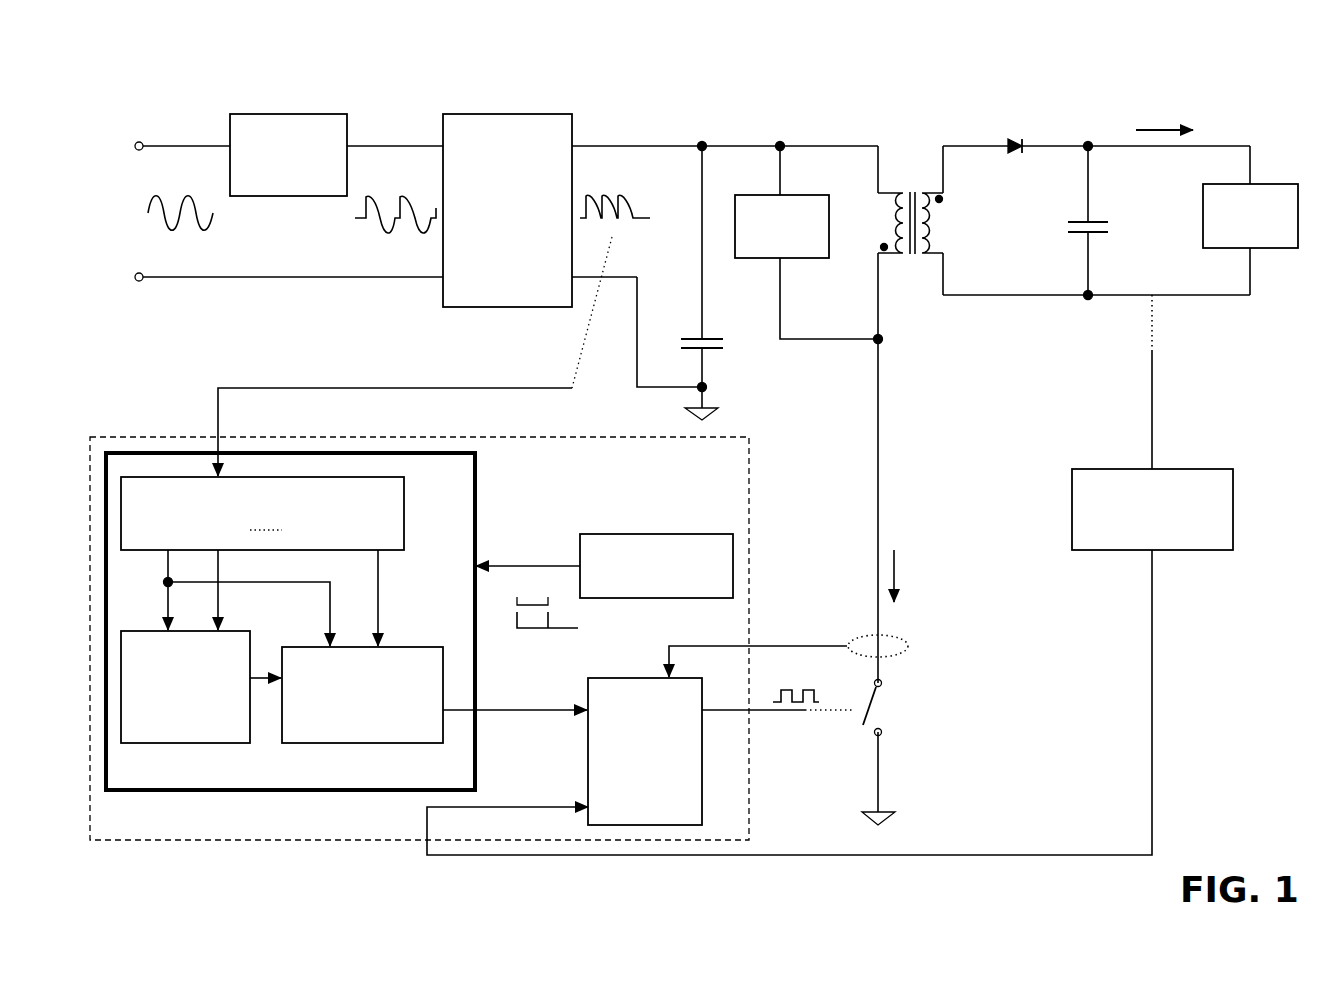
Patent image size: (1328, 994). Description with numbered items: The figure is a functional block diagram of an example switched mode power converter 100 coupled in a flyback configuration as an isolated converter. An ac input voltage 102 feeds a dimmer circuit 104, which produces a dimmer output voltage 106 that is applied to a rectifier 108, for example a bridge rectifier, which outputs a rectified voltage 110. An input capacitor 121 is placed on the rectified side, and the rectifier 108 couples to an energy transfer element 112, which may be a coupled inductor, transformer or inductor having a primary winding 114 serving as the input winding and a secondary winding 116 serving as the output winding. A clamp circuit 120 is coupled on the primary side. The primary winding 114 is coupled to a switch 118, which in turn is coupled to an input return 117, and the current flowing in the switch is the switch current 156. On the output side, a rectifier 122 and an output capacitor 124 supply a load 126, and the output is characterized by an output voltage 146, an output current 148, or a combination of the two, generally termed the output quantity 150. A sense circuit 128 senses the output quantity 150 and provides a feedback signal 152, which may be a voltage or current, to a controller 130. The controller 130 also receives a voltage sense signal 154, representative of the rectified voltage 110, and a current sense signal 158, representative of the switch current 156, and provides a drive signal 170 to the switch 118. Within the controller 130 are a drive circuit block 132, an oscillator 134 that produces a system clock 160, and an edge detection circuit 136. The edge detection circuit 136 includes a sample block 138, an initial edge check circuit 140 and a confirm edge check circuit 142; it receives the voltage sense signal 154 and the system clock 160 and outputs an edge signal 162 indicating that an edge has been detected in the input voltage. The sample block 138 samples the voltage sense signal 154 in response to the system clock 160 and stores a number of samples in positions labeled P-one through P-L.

The power converter 100 is at (1284, 68).
The ac input voltage 102 is at (116, 185).
The dimmer circuit 104 is at (278, 110).
The dimmer output voltage 106 is at (404, 157).
The rectifier 108 is at (502, 110).
The rectified voltage 110 is at (626, 157).
The energy transfer element 112 is at (912, 288).
The primary winding 114 is at (876, 226).
The secondary winding 116 is at (942, 228).
The input return 117 is at (718, 408).
The switch 118 is at (912, 690).
The clamp circuit 120 is at (797, 270).
The input capacitor 121 is at (727, 325).
The rectifier 122 is at (1010, 130).
The output capacitor 124 is at (1060, 238).
The load 126 is at (1265, 175).
The sense circuit 128 is at (1240, 505).
The controller 130 is at (202, 850).
The drive circuit block 132 is at (648, 673).
The oscillator 134 is at (680, 528).
The edge detection circuit 136 is at (152, 440).
The sample block 138 is at (410, 520).
The initial edge check circuit 140 is at (182, 748).
The confirm edge check circuit 142 is at (413, 640).
The output voltage 146 is at (1140, 203).
The output current 148 is at (1158, 95).
The output quantity 150 is at (1163, 345).
The feedback signal 152 is at (1205, 647).
The voltage sense signal 154 is at (330, 360).
The switch current 156 is at (905, 555).
The current sense signal 158 is at (810, 580).
The system clock 160 is at (536, 500).
The edge signal 162 is at (525, 720).
The drive signal 170 is at (805, 775).